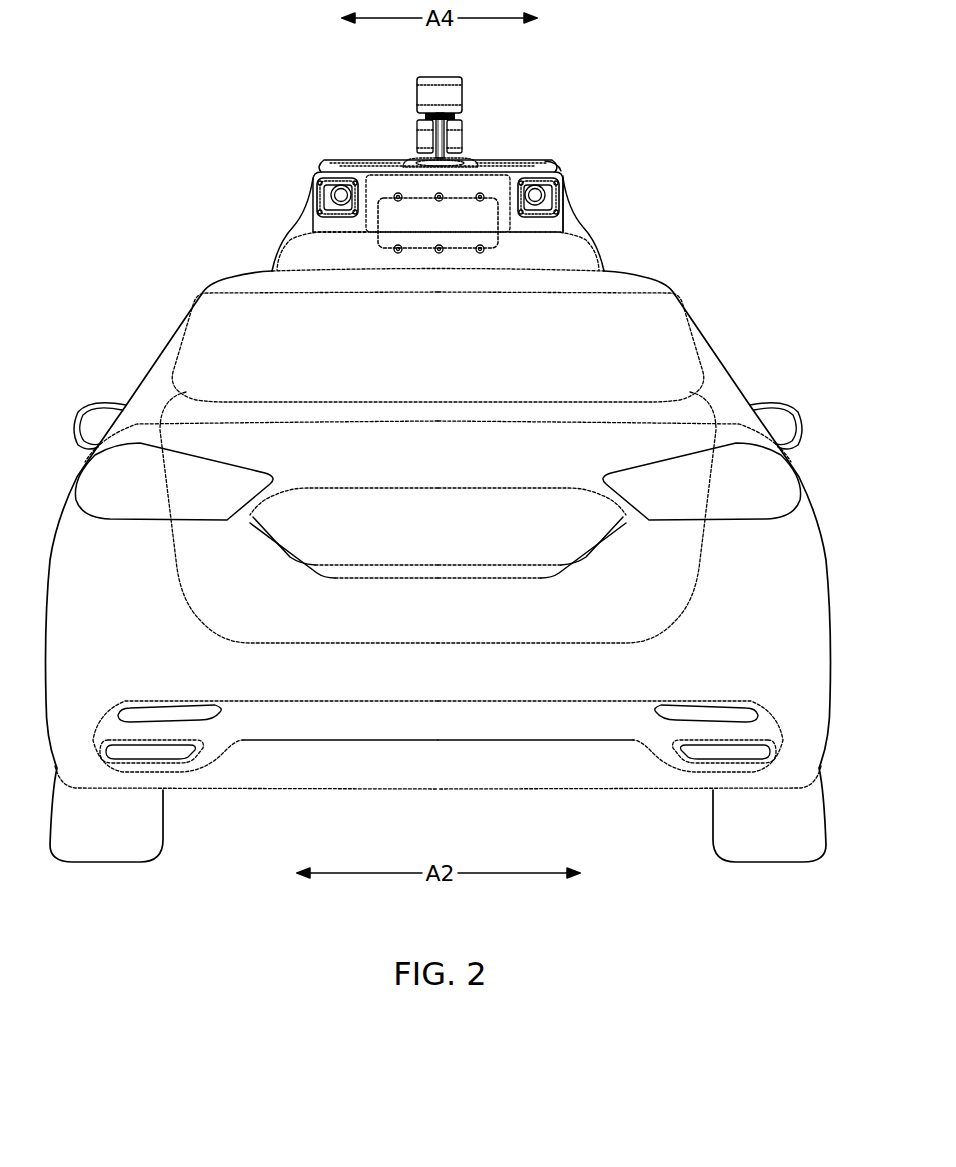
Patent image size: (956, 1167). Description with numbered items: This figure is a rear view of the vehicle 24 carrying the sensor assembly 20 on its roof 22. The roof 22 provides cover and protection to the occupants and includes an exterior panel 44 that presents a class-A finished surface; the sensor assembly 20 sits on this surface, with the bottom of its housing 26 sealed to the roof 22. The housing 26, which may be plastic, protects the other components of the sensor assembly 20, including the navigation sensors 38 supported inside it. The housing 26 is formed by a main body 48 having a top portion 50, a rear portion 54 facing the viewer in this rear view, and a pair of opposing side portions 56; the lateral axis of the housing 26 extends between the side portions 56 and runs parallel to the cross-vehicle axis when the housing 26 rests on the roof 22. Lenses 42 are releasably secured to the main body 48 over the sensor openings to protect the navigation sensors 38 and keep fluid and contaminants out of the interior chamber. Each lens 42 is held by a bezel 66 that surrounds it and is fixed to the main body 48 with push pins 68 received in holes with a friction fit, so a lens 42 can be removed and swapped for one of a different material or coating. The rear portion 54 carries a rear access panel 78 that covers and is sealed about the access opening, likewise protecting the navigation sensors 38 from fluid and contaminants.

The sensor assembly 20 is at (658, 152).
The roof 22 is at (647, 285).
The vehicle 24 is at (768, 367).
The housing 26 is at (315, 178).
The navigation sensor 38 is at (303, 229).
The lens 42 is at (320, 172).
The exterior panel 44 is at (612, 274).
The main body 48 is at (563, 182).
The top portion 50 is at (560, 172).
The rear portion 54 is at (403, 183).
The side portion 56 is at (436, 251).
The bezel 66 is at (338, 217).
The push pin 68 is at (352, 218).
The rear access panel 78 is at (463, 218).